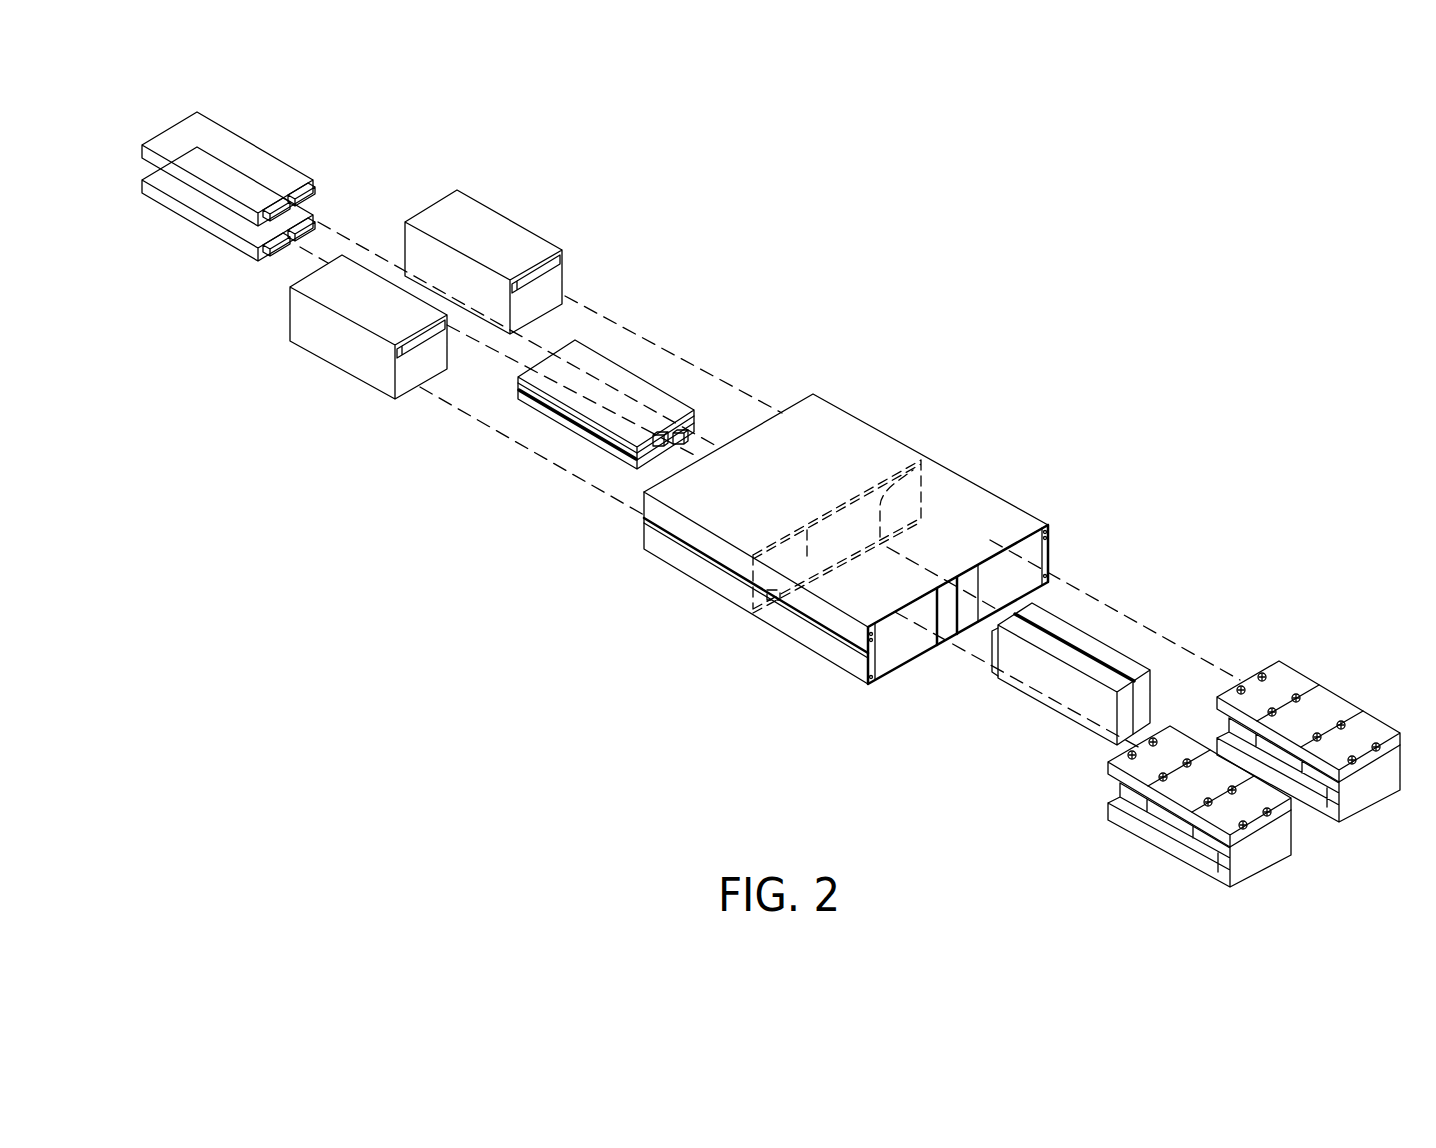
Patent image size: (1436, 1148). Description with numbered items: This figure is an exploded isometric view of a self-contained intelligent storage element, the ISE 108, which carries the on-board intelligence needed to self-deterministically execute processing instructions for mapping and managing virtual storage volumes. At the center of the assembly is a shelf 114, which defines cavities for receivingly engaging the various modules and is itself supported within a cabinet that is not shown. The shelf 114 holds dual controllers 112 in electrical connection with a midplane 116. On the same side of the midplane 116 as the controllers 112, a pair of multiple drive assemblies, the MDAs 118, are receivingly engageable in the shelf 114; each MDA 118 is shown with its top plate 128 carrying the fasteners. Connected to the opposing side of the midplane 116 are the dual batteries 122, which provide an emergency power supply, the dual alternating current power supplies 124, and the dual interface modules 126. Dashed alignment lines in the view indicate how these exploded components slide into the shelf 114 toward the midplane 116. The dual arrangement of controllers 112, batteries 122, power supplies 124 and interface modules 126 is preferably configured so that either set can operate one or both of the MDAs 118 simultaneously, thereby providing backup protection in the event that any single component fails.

The intelligent storage element 108 is at (849, 208).
The controller 112 is at (1104, 654).
The shelf 114 is at (823, 537).
The midplane 116 is at (846, 517).
The multiple drive assembly 118 is at (1213, 750).
The battery 122 is at (597, 372).
The alternating current power supply 124 is at (480, 233).
The interface module 126 is at (258, 168).
The mounting plate with fasteners 128 is at (1278, 677).